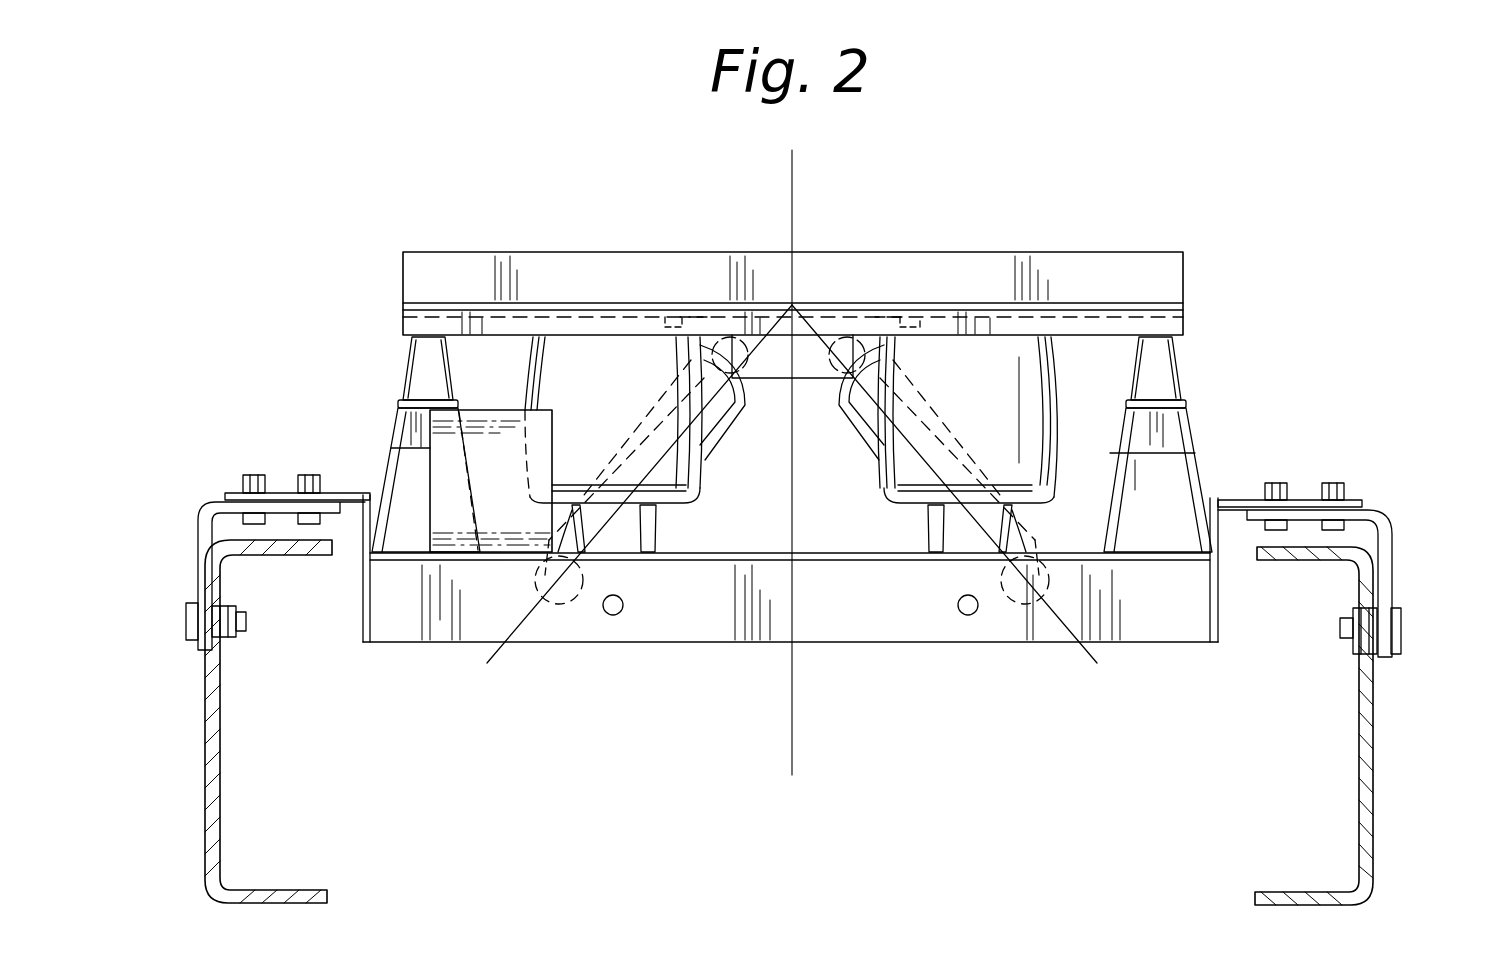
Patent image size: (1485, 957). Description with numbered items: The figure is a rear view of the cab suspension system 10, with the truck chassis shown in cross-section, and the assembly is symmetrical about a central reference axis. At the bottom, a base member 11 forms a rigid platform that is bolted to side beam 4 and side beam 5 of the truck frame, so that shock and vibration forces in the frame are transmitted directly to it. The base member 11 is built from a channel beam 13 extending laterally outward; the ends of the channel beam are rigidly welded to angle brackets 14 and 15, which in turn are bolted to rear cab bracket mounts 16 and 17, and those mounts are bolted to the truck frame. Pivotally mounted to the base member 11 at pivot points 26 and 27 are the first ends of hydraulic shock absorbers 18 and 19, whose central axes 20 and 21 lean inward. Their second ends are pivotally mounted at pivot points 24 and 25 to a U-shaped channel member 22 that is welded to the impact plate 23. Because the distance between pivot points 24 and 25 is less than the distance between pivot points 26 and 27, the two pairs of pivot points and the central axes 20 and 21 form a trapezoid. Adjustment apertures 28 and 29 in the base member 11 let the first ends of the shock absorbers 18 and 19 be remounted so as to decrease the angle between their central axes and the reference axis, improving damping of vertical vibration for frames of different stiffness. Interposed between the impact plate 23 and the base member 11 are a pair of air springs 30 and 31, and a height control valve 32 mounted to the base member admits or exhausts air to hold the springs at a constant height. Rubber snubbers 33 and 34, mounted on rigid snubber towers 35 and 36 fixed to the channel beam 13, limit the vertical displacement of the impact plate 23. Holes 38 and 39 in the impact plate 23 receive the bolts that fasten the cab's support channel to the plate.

The side beam 4 is at (205, 738).
The side beam 5 is at (1375, 718).
The cab suspension system 10 is at (848, 208).
The base member 11 is at (865, 630).
The channel beam 13 is at (1165, 630).
The angle bracket 14 is at (1240, 498).
The angle bracket 15 is at (333, 493).
The rear cab bracket mount 16 is at (1394, 548).
The rear cab bracket mount 17 is at (198, 528).
The hydraulic shock absorber 18 is at (725, 440).
The hydraulic shock absorber 19 is at (857, 440).
The central axis 20 is at (705, 490).
The central axis 21 is at (878, 482).
The U-shaped channel member 22 is at (781, 368).
The impact plate 23 is at (598, 265).
The pivot point 24 is at (745, 345).
The pivot point 25 is at (842, 345).
The pivot point 26 is at (553, 590).
The pivot point 27 is at (1030, 590).
The adjustment aperture 28 is at (613, 616).
The adjustment aperture 29 is at (968, 616).
The air spring 30 is at (533, 348).
The air spring 31 is at (1010, 362).
The height control valve 32 is at (507, 520).
The rubber snubber 33 is at (410, 365).
The rubber snubber 34 is at (1185, 365).
The snubber tower 35 is at (397, 412).
The snubber tower 36 is at (1200, 420).
The hole 38 is at (703, 330).
The hole 39 is at (887, 330).